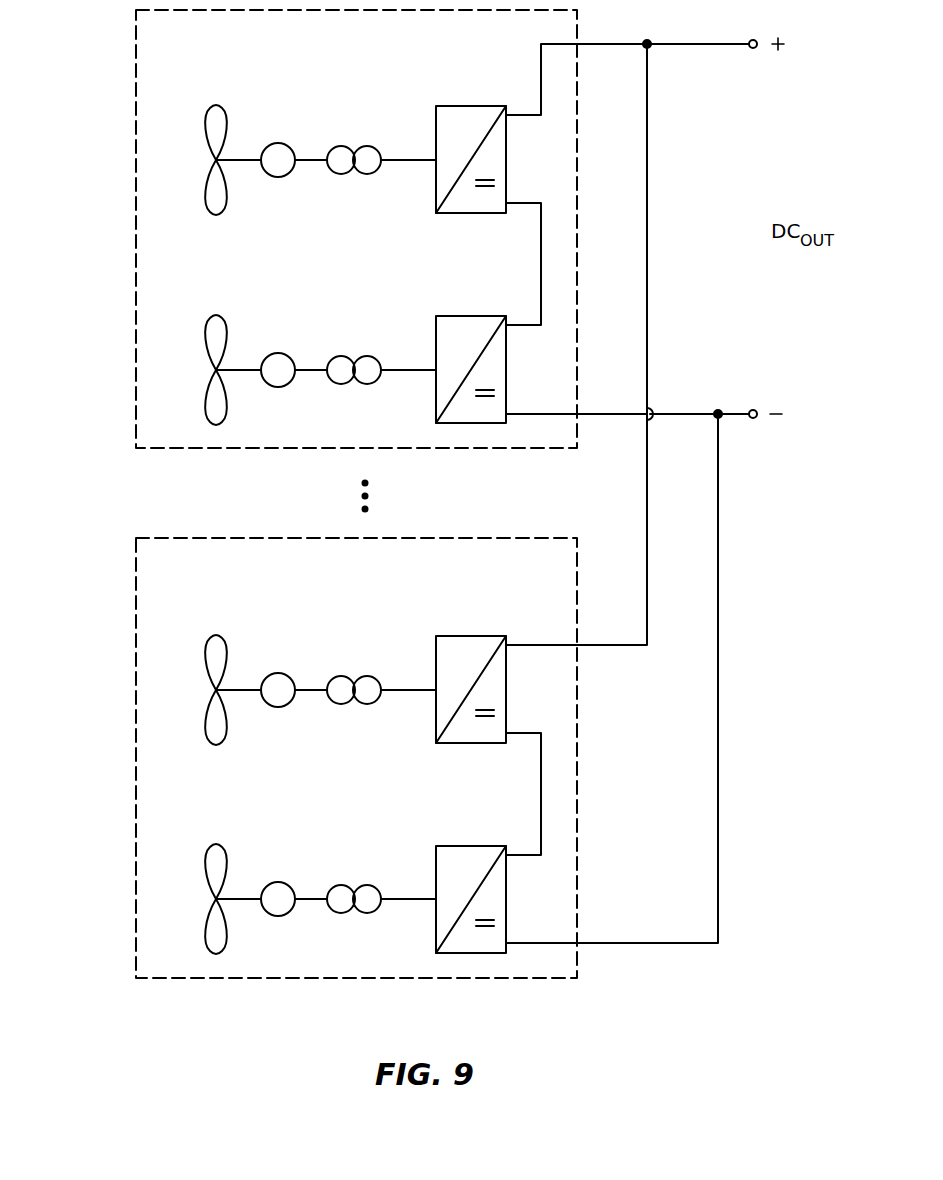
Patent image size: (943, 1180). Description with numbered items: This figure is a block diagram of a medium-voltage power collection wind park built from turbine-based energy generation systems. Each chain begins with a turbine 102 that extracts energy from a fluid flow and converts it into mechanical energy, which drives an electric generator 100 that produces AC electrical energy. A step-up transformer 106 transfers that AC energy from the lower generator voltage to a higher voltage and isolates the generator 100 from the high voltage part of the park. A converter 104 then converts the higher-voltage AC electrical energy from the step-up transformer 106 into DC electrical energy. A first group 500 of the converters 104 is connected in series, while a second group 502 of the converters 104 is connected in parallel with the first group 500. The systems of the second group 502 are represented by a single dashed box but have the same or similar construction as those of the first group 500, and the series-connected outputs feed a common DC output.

The electric generator 100 is at (277, 143).
The turbine 102 is at (214, 106).
The converter 104 is at (463, 97).
The step-up transformer 106 is at (347, 133).
The first group of converters 500 is at (136, 80).
The second group of converters 502 is at (136, 590).